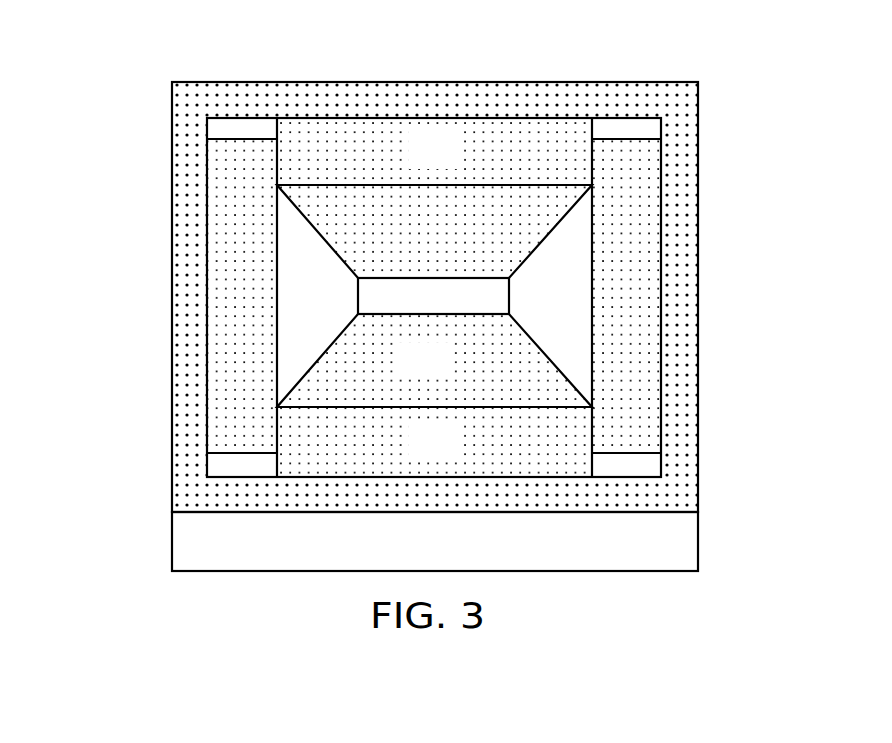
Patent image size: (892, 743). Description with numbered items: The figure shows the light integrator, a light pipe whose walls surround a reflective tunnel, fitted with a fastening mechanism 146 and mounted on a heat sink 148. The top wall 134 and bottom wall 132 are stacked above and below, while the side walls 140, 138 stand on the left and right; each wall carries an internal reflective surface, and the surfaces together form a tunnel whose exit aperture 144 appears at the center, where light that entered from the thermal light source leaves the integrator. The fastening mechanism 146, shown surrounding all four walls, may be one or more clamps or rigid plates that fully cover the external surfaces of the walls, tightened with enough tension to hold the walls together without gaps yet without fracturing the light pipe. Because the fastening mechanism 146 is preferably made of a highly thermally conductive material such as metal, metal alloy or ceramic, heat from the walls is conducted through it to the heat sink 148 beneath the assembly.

The fastening mechanism 146 is at (523, 87).
The heat sink 148 is at (172, 540).
The side wall 140 is at (273, 287).
The side wall 138 is at (600, 289).
The top wall 134 is at (458, 163).
The bottom wall 132 is at (458, 454).
The exit aperture 144 is at (433, 305).